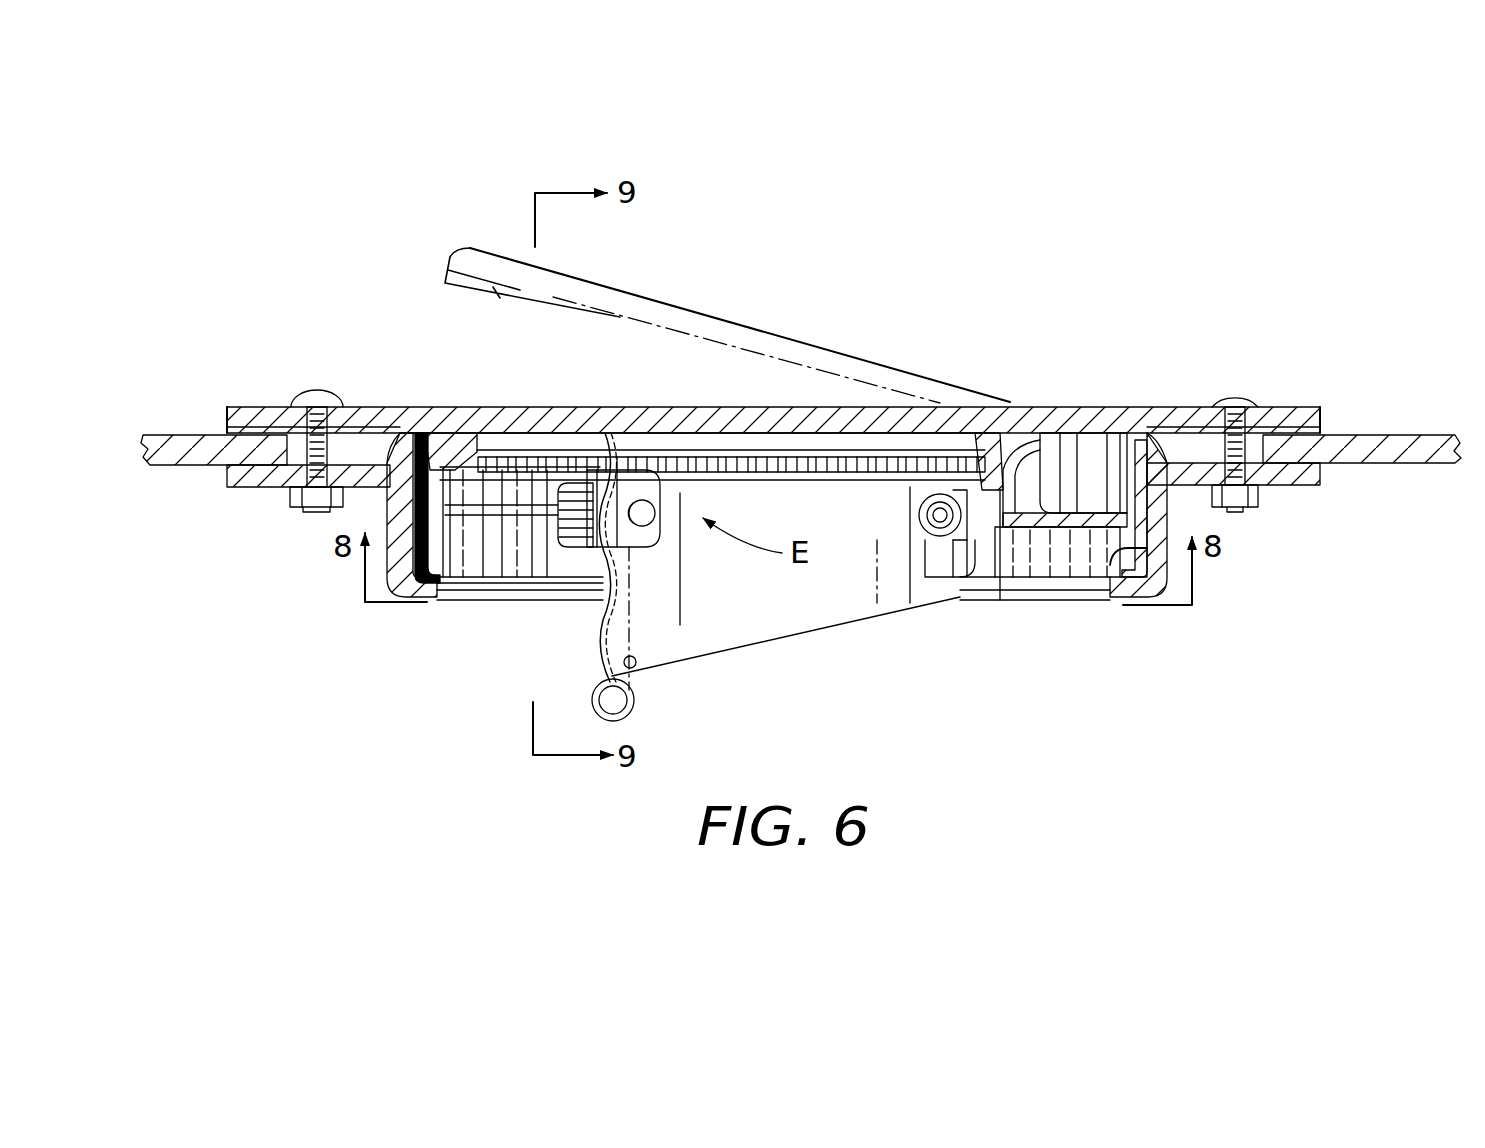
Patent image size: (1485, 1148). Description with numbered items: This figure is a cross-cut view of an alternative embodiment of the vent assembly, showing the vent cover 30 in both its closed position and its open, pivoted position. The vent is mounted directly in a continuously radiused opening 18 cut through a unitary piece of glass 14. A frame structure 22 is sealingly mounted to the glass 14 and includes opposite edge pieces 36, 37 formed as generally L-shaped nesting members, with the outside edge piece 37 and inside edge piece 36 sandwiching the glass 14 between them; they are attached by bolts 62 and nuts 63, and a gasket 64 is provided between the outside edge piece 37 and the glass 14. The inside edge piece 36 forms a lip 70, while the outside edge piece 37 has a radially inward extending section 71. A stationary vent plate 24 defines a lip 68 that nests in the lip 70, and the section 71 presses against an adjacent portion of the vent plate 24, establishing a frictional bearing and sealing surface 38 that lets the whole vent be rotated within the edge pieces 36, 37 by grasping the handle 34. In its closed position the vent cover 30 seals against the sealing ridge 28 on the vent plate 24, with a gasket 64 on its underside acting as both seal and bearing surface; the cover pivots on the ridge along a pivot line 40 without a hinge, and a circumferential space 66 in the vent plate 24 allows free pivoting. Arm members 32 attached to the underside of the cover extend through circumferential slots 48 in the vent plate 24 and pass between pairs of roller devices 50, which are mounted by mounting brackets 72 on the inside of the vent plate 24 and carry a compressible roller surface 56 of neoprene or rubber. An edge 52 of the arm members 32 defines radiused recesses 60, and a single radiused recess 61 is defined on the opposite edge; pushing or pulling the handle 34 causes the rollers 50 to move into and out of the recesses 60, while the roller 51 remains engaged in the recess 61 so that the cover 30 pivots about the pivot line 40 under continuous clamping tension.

The glass 14 is at (1377, 422).
The opening 18 is at (390, 407).
The frame structure 22 is at (283, 407).
The vent plate 24 is at (1028, 603).
The sealing ridge 28 is at (450, 407).
The vent cover 30 is at (537, 407).
The arm members 32 is at (765, 635).
The handle 34 is at (615, 700).
The inside edge piece 36 is at (265, 487).
The outside edge piece 37 is at (247, 407).
The frictional bearing and sealing surface 38 is at (390, 578).
The pivot line 40 is at (1028, 407).
The circumferential slots 48 is at (945, 407).
The roller devices 50 is at (547, 530).
The roller 51 is at (910, 577).
The edge 52 is at (653, 598).
The compressible roller surface 56 is at (580, 548).
The radiused recesses 60 is at (608, 642).
The single radiused recess 61 is at (937, 593).
The bolts 62 is at (1233, 397).
The nuts 63 is at (1235, 490).
The gasket 64 is at (357, 407).
The circumferential space 66 is at (1073, 440).
The lip 68 is at (447, 598).
The lip 70 is at (403, 592).
The radially inward extending section 71 is at (1137, 550).
The mounting brackets 72 is at (645, 480).